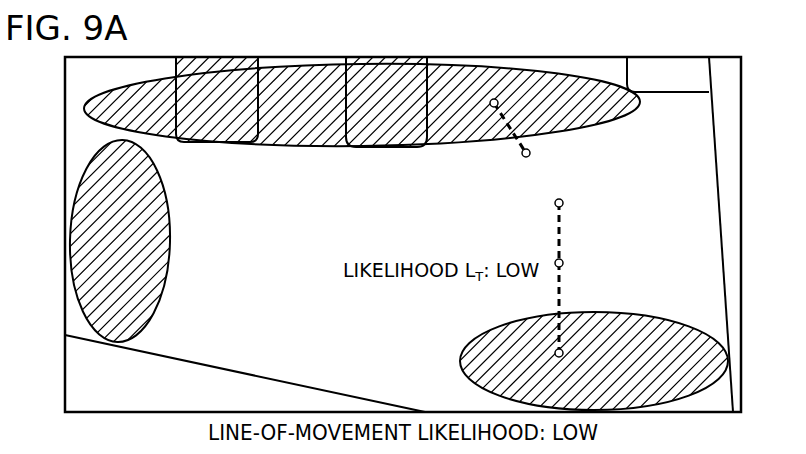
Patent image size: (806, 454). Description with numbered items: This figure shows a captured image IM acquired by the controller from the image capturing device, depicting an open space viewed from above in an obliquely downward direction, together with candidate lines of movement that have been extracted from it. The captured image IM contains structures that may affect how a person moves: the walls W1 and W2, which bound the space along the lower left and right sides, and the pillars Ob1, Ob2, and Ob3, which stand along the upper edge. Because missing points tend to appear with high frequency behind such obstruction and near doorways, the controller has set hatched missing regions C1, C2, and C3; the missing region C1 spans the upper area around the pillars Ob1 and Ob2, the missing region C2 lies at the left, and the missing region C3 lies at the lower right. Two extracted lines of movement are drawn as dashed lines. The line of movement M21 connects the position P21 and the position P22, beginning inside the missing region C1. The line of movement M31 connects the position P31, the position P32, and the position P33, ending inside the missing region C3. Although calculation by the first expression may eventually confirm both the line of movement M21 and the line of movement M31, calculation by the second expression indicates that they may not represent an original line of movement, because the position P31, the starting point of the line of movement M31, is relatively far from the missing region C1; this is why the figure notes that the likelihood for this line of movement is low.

The captured image IM is at (742, 197).
The missing region C1 is at (313, 150).
The missing region C2 is at (172, 257).
The missing region C3 is at (610, 312).
The pillar Ob1 is at (260, 109).
The pillar Ob2 is at (420, 108).
The pillar Ob3 is at (700, 80).
The wall W1 is at (168, 398).
The wall W2 is at (733, 140).
The line of movement M21 is at (499, 148).
The position P21 is at (498, 103).
The position P22 is at (532, 153).
The line of movement M31 is at (556, 240).
The position P31 is at (565, 204).
The position P32 is at (563, 262).
The position P33 is at (556, 349).